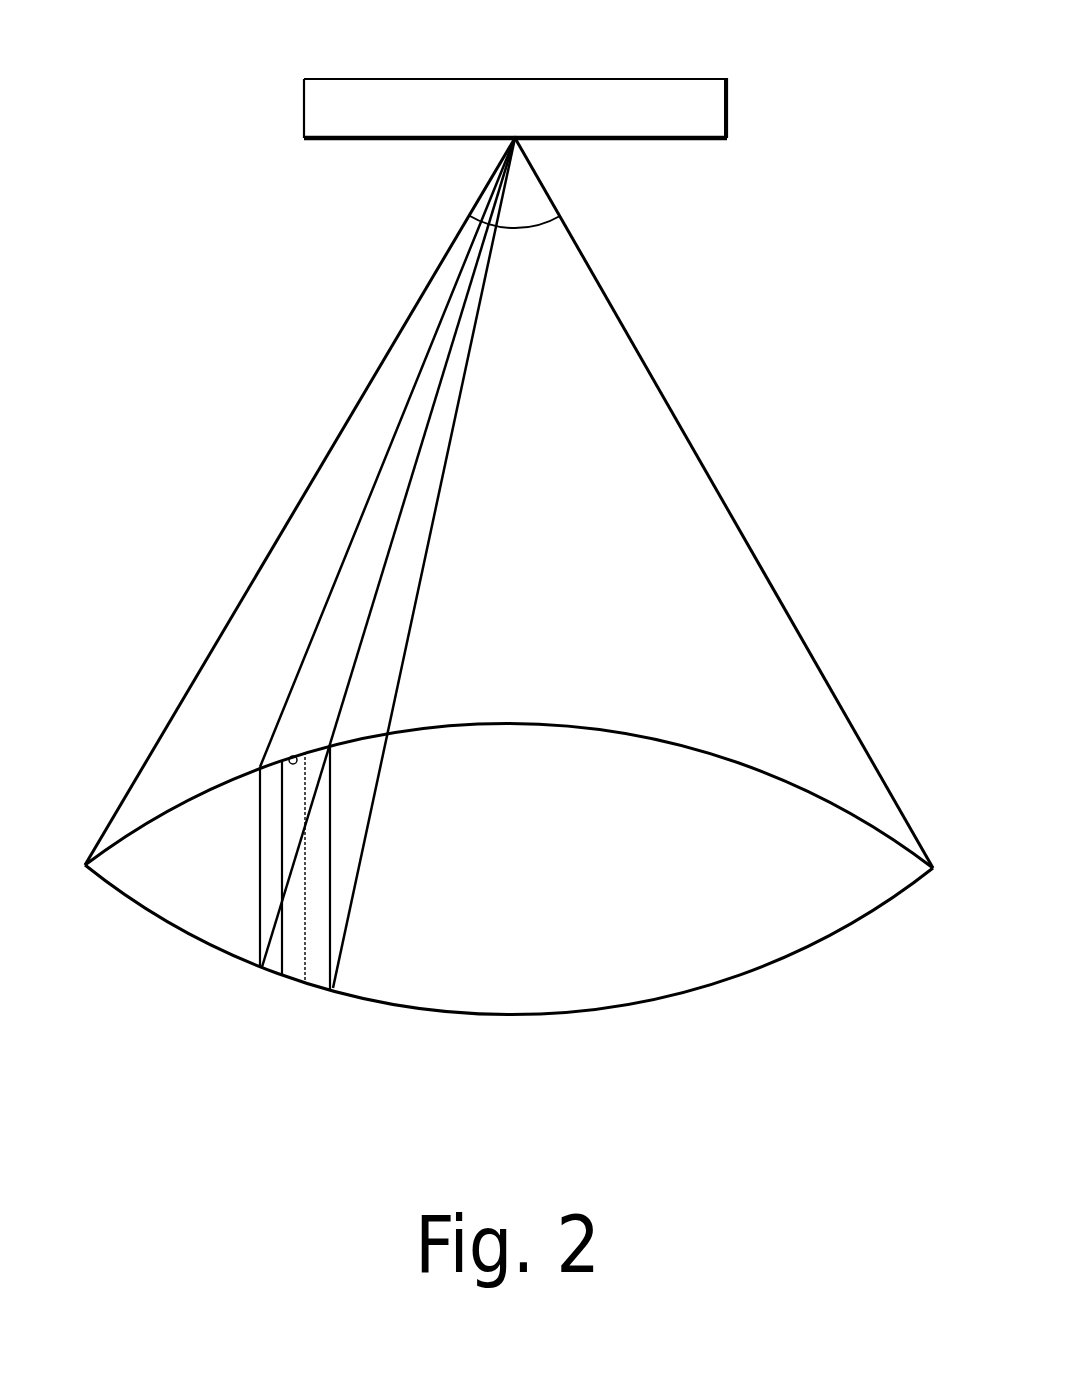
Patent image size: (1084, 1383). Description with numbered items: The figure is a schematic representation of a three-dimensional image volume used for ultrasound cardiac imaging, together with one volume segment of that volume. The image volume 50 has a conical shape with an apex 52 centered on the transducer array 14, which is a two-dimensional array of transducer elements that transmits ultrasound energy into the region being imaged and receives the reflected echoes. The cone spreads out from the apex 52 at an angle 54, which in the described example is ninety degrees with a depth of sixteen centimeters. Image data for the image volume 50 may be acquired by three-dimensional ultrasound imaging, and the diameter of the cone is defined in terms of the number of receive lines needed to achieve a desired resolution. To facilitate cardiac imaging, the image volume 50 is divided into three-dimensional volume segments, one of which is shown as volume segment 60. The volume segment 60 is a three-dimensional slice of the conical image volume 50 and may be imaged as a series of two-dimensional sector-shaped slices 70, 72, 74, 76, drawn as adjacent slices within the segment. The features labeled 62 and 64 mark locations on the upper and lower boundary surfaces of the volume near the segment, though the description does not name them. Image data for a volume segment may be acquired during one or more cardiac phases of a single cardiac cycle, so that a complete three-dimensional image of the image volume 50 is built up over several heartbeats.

The transducer array 14 is at (630, 79).
The image volume 50 is at (685, 433).
The apex 52 is at (515, 138).
The angle 54 is at (533, 228).
The volume segment 60 is at (420, 583).
The lens upper surface point 62 is at (291, 756).
The lens lower surface 64 is at (313, 988).
The sector-shaped slice 70 is at (260, 807).
The sector-shaped slice 72 is at (281, 850).
The sector-shaped slice 74 is at (305, 860).
The sector-shaped slice 76 is at (332, 877).